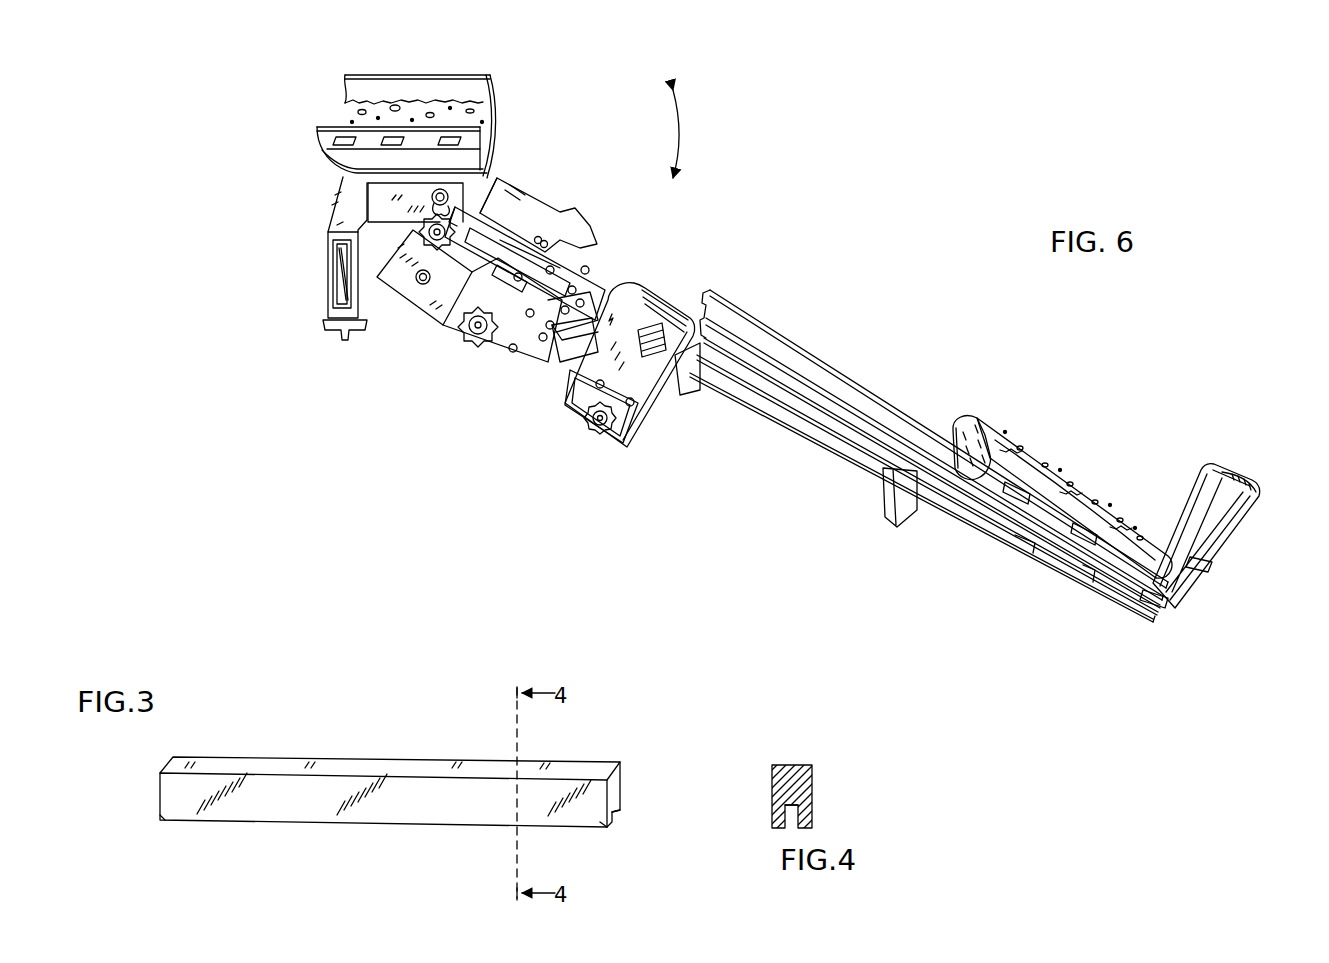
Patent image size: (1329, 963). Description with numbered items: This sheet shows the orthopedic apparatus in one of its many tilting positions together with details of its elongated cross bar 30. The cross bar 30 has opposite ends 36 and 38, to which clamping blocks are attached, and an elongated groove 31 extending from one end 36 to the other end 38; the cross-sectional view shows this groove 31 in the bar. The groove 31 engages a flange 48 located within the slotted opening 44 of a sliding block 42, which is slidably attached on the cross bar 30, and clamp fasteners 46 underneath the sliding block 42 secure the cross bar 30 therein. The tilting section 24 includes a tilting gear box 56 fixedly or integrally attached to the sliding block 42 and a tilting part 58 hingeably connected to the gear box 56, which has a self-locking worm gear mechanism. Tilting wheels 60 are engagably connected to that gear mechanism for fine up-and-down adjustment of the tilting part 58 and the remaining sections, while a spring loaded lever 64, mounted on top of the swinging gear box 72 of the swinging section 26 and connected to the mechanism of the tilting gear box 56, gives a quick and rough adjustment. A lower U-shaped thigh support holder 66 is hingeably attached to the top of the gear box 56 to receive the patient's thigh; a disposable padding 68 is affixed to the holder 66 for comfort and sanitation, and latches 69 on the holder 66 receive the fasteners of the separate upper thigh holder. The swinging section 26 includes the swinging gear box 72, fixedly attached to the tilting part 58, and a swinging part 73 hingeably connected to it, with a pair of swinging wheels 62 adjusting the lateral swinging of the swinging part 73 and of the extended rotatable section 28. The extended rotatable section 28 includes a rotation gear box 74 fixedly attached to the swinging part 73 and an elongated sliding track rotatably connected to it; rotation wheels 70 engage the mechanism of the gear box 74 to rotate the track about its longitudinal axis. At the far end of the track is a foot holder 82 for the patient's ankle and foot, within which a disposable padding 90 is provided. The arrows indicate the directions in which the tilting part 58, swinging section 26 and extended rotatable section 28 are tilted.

In FIG. 6, the tilting section 24 is at (461, 103).
In FIG. 6, the swinging section 26 is at (588, 267).
In FIG. 6, the extended rotatable section 28 is at (618, 366).
In FIG. 3, the elongated cross bar 30 is at (338, 747).
In FIG. 4, the elongated cross bar 30 is at (823, 753).
In FIG. 3, the elongated groove 31 is at (612, 806).
In FIG. 4, the elongated groove 31 is at (793, 821).
In FIG. 3, the end of cross bar 36 is at (165, 818).
In FIG. 3, the other end of cross bar 38 is at (607, 827).
In FIG. 6, the sliding block 42 is at (337, 213).
In FIG. 6, the slotted opening 44 is at (337, 254).
In FIG. 6, the clamp fasteners 46 is at (343, 338).
In FIG. 6, the flange 48 is at (342, 286).
In FIG. 6, the tilting gear box 56 is at (373, 198).
In FIG. 6, the tilting part 58 is at (420, 303).
In FIG. 6, the tilting wheels 60 is at (457, 222).
In FIG. 6, the swinging wheels 62 is at (462, 343).
In FIG. 6, the spring loaded lever 64 is at (580, 228).
In FIG. 6, the lower U-shaped thigh support holder 66 is at (472, 88).
In FIG. 6, the disposable padding 68 is at (497, 128).
In FIG. 6, the latches 69 is at (341, 137).
In FIG. 6, the rotation wheels 70 is at (590, 430).
In FIG. 6, the swinging gear box 72 is at (503, 350).
In FIG. 6, the swinging part 73 is at (570, 362).
In FIG. 6, the rotation gear box 74 is at (655, 310).
In FIG. 6, the foot holder 82 is at (1228, 463).
In FIG. 6, the disposable padding 90 is at (1008, 447).